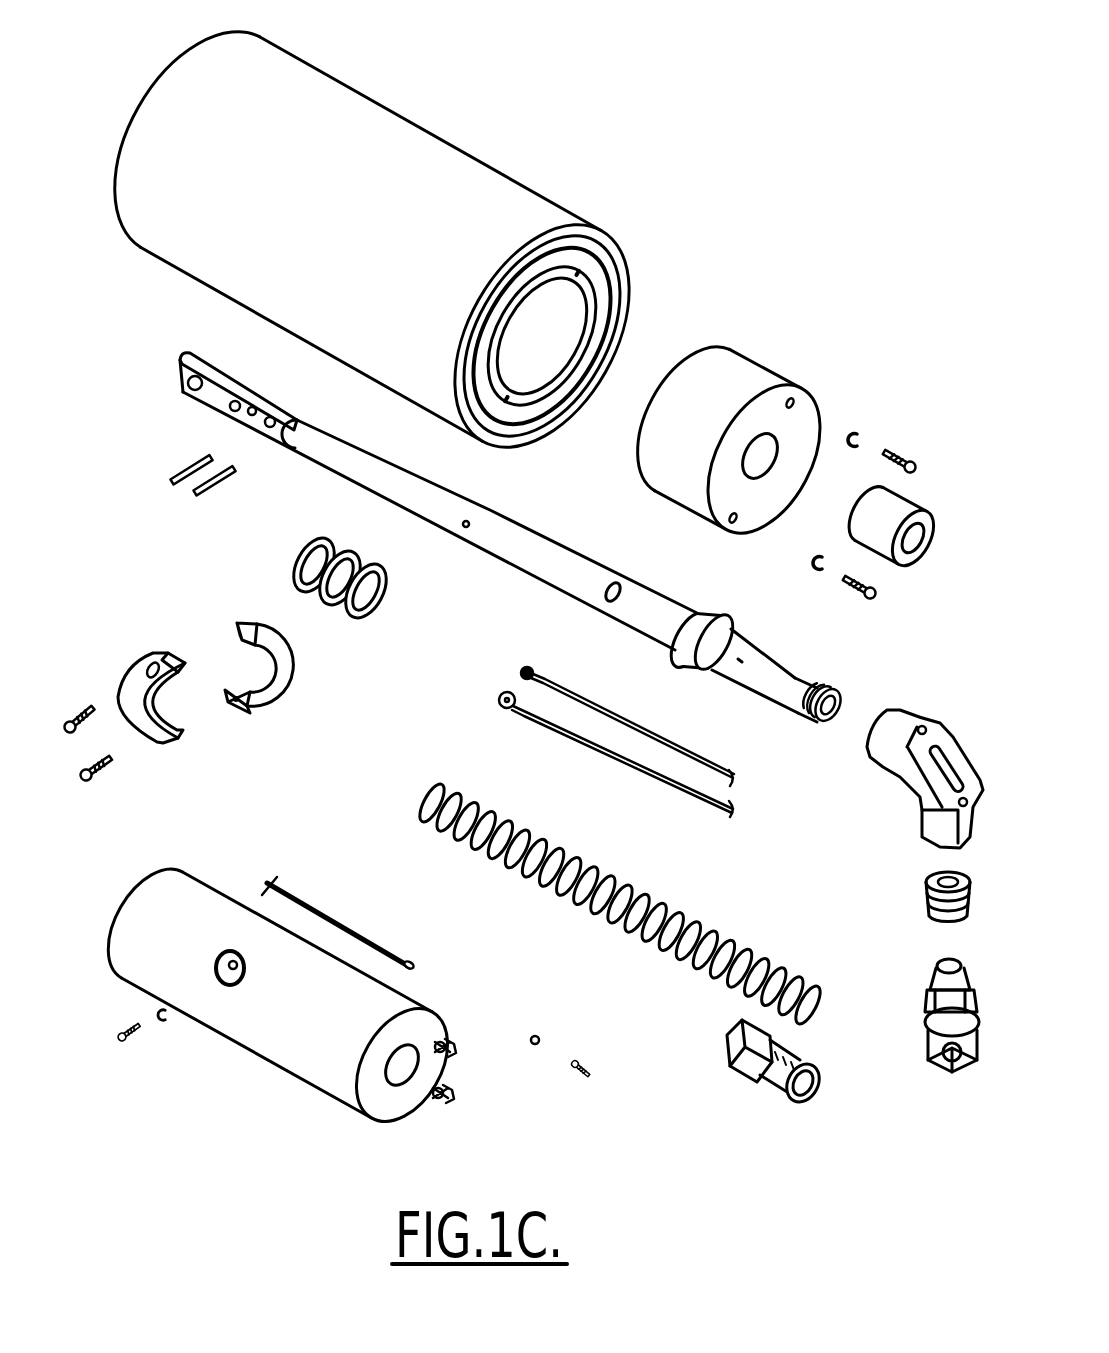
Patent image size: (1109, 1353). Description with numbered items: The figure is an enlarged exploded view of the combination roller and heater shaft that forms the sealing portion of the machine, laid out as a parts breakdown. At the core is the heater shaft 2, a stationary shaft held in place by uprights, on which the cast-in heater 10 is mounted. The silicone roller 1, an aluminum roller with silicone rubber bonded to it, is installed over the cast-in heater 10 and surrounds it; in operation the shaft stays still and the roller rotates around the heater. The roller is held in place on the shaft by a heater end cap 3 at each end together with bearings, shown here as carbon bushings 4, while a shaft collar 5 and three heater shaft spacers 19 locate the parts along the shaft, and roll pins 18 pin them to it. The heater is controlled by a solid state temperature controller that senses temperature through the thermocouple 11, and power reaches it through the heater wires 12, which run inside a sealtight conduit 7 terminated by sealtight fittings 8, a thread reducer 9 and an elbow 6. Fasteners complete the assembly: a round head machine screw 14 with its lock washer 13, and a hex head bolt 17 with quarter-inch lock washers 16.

The silicone roller 1 is at (460, 148).
The heater shaft 2 is at (180, 358).
The heater end cap 3 is at (738, 353).
The carbon bushing 4 is at (930, 515).
The shaft collar 5 is at (153, 652).
The elbow 6 is at (920, 798).
The sealtight conduit 7 is at (640, 937).
The sealtight fitting 8 is at (930, 1063).
The thread reducer 9 is at (923, 887).
The cast-in heater 10 is at (315, 1087).
The thermocouple 11 is at (330, 913).
The heater wires 12 is at (497, 702).
The lock washer 13 is at (535, 1032).
The round head machine screw 14 is at (587, 1080).
The lock washer 16 is at (852, 430).
The hex head bolt 17 is at (133, 1040).
The roll pin 18 is at (177, 470).
The heater shaft spacer 19 is at (297, 552).